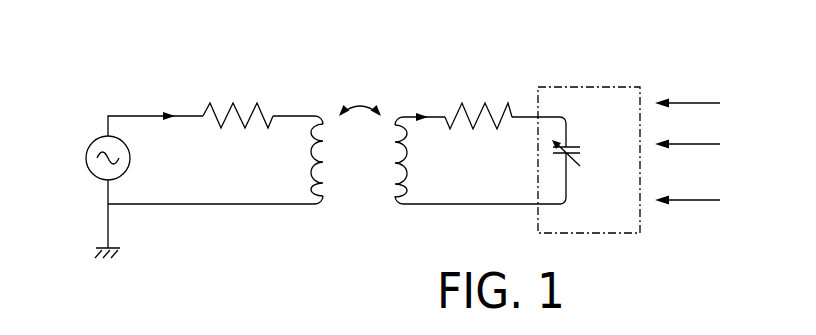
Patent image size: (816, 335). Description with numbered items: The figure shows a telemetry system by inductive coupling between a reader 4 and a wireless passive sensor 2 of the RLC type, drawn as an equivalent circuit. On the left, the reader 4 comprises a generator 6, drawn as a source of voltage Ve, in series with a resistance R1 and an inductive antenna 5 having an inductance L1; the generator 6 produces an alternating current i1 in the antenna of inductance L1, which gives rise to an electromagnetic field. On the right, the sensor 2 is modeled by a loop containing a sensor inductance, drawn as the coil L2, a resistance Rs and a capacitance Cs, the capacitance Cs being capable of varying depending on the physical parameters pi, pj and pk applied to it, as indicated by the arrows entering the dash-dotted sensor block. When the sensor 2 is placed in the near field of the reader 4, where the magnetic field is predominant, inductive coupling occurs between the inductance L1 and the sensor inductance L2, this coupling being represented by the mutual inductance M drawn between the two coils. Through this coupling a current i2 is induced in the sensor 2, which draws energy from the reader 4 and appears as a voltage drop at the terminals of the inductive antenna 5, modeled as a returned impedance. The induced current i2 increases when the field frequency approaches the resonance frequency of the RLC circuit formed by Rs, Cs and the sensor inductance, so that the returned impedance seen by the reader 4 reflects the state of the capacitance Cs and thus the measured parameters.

The wireless passive sensor 2 is at (474, 90).
The reader 4 is at (246, 88).
The inductive antenna 5 is at (329, 188).
The generator 6 is at (82, 188).
The primary circuit resistor R1 is at (236, 130).
The inductance of the reader antenna L1 is at (326, 152).
The secondary coil L2 is at (392, 157).
The mutual inductance M is at (360, 96).
The resistance Rs is at (483, 122).
The capacitance Cs is at (578, 159).
The excitation voltage source Ve is at (87, 155).
The alternating current i1 is at (167, 112).
The induced current i2 is at (422, 112).
The physical parameter pi is at (703, 100).
The physical parameter pj is at (712, 140).
The physical parameter pk is at (700, 197).